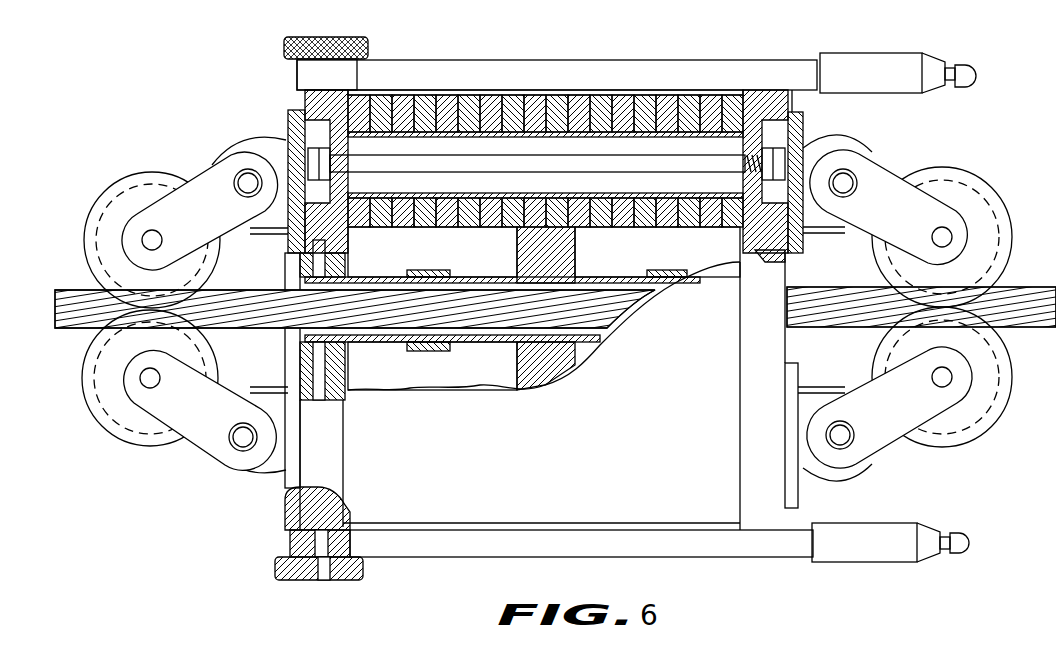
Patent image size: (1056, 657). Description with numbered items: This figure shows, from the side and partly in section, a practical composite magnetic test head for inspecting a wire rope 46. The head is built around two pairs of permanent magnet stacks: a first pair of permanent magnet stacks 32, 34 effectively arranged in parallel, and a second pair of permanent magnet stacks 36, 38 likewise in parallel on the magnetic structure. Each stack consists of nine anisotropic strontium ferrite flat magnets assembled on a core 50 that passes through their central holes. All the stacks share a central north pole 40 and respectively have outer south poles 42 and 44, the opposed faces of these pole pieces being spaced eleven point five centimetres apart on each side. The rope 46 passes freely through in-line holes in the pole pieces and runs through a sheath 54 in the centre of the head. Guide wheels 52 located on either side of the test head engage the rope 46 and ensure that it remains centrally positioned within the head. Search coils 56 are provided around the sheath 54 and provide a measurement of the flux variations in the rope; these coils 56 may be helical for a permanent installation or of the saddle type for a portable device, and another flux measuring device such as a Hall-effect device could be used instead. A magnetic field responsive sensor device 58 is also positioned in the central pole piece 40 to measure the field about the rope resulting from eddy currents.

The permanent magnet stack 32 is at (446, 228).
The permanent magnet stack 34 is at (425, 512).
The permanent magnet stack 36 is at (695, 222).
The permanent magnet stack 38 is at (717, 507).
The central north pole 40 is at (543, 108).
The outer south pole 42 is at (296, 99).
The outer south pole 44 is at (797, 103).
The wire rope 46 is at (62, 296).
The core 50 is at (392, 228).
The guide wheels 52 is at (985, 193).
The sheath 54 is at (383, 345).
The search coils 56 is at (652, 270).
The magnetic field responsive sensor device 58 is at (517, 350).